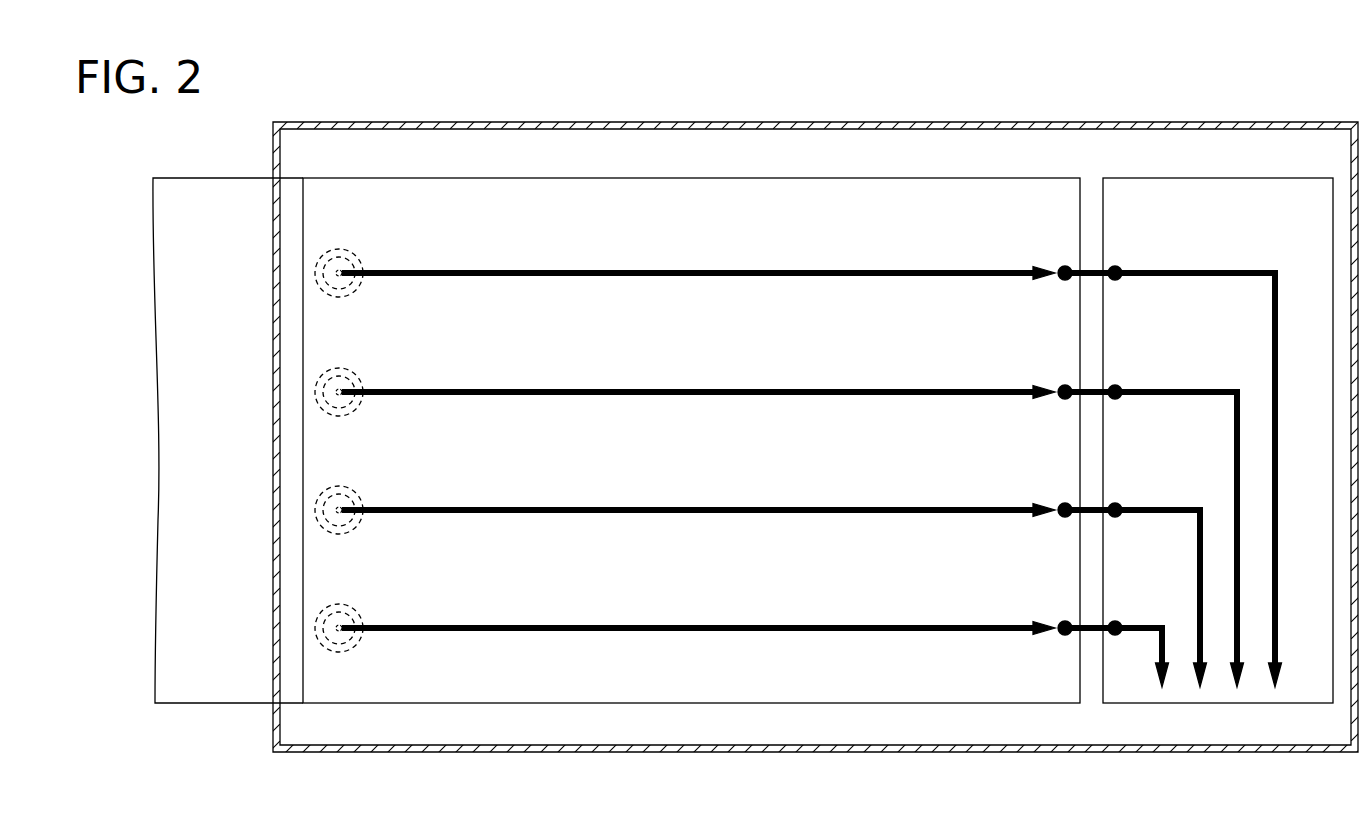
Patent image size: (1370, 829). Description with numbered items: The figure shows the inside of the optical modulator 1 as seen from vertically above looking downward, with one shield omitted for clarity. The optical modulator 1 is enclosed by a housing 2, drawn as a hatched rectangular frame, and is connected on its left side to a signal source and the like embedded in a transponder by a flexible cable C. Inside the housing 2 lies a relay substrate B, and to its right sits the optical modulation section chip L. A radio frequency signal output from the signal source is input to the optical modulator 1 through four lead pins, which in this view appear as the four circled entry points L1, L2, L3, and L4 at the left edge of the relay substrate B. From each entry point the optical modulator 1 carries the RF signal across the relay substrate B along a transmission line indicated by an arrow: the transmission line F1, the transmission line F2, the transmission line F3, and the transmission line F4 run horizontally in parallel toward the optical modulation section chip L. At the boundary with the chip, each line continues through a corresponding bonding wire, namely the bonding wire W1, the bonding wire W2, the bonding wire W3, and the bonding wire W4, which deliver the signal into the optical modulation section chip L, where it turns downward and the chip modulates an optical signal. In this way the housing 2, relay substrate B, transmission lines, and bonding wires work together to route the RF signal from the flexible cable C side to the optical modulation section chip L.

The optical modulator 1 is at (906, 75).
The housing 2 is at (581, 123).
The relay substrate B is at (396, 197).
The flexible cable C is at (219, 697).
The optical modulation section chip L is at (1258, 178).
The light source 1 L1 is at (363, 617).
The light source 2 L2 is at (363, 499).
The light source 3 L3 is at (363, 381).
The light source 4 L4 is at (363, 262).
The transmission line F1 is at (600, 626).
The transmission line F2 is at (600, 508).
The transmission line F3 is at (600, 390).
The transmission line F4 is at (600, 271).
The bonding wire W1 is at (1094, 627).
The bonding wire W2 is at (1094, 509).
The bonding wire W3 is at (1094, 391).
The bonding wire W4 is at (1094, 272).